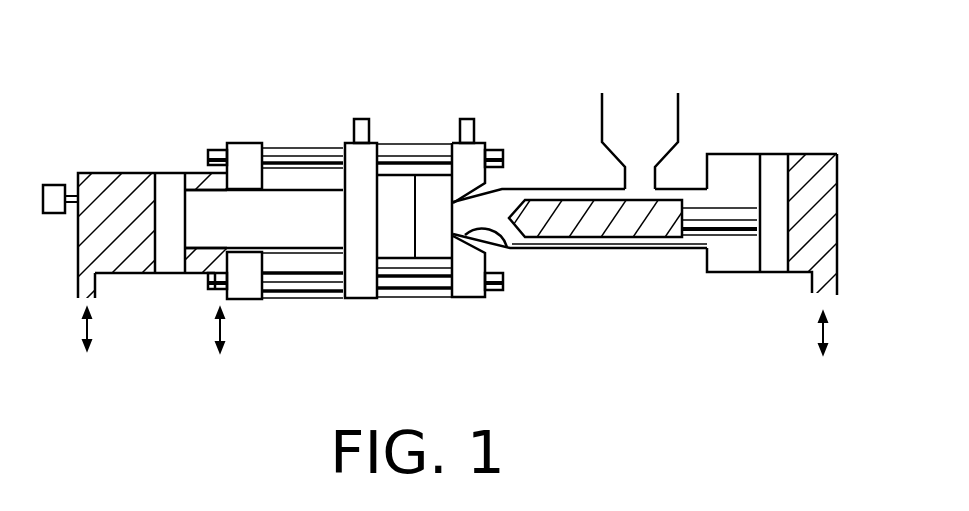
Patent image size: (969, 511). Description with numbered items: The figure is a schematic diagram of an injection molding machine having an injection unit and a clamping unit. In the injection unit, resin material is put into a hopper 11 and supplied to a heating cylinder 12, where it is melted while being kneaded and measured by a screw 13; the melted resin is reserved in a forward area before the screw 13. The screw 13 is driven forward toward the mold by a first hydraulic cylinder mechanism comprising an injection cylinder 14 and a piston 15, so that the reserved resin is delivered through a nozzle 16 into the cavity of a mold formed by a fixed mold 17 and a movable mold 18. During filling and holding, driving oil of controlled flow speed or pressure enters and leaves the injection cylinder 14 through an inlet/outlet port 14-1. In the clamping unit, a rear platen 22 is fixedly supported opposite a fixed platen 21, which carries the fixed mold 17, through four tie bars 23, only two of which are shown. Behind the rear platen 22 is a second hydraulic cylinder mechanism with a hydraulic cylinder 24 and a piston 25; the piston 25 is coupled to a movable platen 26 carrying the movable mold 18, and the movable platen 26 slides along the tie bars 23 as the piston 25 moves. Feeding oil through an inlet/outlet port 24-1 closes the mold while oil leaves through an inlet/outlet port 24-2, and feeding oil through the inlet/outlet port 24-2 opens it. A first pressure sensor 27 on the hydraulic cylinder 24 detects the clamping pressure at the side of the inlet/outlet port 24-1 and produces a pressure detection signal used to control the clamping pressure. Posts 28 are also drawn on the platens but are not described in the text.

The hopper 11 is at (680, 113).
The heating cylinder 12 is at (630, 252).
The screw 13 is at (558, 205).
The injection cylinder 14 is at (840, 198).
The inlet/outlet port 14-1 is at (837, 283).
The piston 15 is at (773, 172).
The nozzle 16 is at (512, 250).
The fixed mold 17 is at (430, 243).
The movable mold 18 is at (395, 243).
The fixed platen 21 is at (467, 155).
The rear platen 22 is at (240, 142).
The tie bars 23 is at (297, 148).
The hydraulic cylinder 24 is at (118, 275).
The inlet/outlet port 24-1 is at (83, 298).
The inlet/outlet port 24-2 is at (213, 280).
The piston 25 is at (168, 183).
The movable platen 26 is at (353, 160).
The first pressure sensor 27 is at (58, 217).
The posts 28 is at (458, 120).